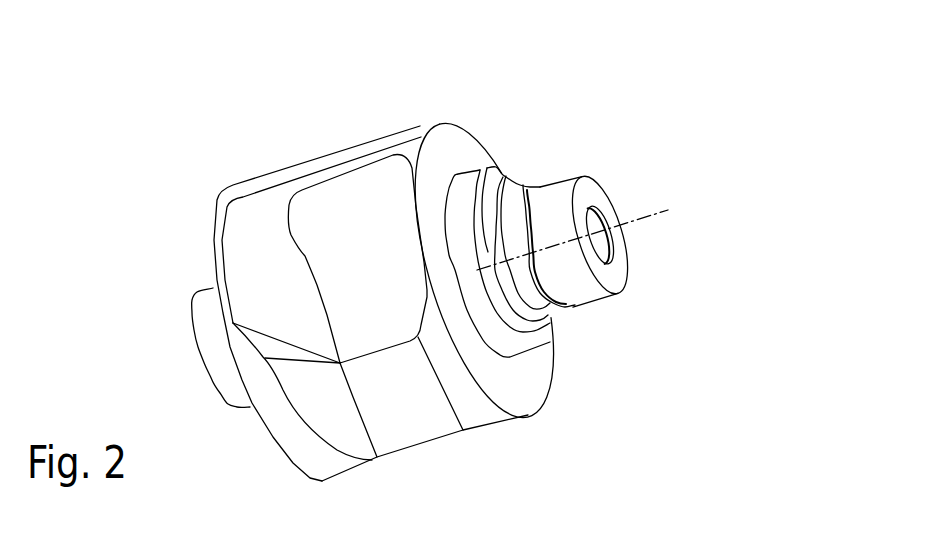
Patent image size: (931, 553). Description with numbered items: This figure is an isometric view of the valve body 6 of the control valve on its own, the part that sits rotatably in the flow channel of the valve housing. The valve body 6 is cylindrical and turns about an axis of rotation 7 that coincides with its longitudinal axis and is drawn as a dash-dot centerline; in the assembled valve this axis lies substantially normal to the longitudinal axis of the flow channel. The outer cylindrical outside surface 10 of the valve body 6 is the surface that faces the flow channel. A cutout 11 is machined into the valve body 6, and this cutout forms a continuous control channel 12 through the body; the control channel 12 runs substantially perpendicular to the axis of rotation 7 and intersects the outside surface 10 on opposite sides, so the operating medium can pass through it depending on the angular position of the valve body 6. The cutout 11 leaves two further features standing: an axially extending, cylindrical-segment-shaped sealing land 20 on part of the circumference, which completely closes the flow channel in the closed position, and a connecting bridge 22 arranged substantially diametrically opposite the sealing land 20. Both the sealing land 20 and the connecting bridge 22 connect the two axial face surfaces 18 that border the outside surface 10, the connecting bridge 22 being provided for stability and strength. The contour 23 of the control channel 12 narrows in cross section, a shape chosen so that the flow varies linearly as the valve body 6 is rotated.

The valve body 6 is at (551, 109).
The axis of rotation 7 is at (650, 217).
The outside surface 10 is at (473, 402).
The cutout 11 is at (298, 255).
The control channel 12 is at (424, 295).
The axial face surfaces 18 is at (210, 268).
The sealing land 20 is at (430, 453).
The connecting bridge 22 is at (322, 167).
The contour 23 is at (246, 200).